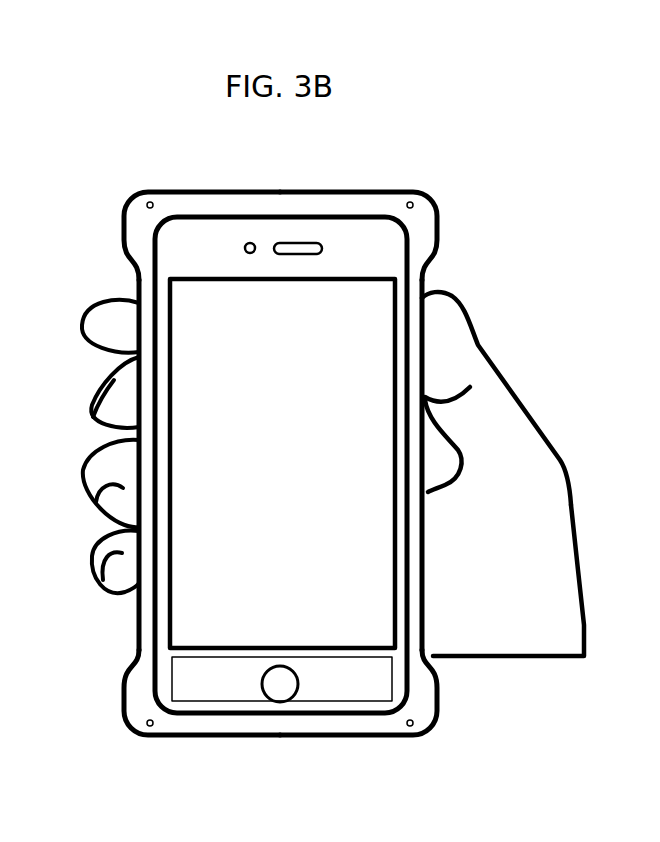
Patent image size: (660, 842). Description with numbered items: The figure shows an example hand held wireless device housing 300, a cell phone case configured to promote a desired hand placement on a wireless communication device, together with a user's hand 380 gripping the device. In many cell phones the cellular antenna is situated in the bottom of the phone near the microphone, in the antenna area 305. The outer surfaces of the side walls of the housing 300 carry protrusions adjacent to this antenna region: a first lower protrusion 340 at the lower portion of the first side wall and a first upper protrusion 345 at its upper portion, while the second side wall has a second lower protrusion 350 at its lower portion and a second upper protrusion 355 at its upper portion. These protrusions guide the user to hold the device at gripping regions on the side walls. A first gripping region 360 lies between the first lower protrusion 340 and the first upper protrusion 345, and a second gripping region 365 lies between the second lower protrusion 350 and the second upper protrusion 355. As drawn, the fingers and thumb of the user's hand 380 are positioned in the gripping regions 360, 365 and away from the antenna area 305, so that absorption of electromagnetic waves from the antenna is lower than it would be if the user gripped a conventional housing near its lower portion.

The hand held wireless device housing 300 is at (285, 451).
The antenna area 305 is at (332, 678).
The first lower protrusion 340 is at (122, 712).
The first upper protrusion 345 is at (125, 215).
The second lower protrusion 350 is at (440, 717).
The second upper protrusion 355 is at (442, 223).
The first gripping region 360 is at (64, 403).
The second gripping region 365 is at (566, 421).
The user's hand 380 is at (576, 553).